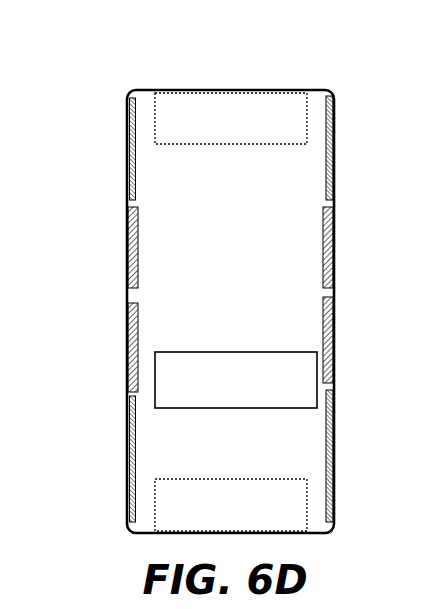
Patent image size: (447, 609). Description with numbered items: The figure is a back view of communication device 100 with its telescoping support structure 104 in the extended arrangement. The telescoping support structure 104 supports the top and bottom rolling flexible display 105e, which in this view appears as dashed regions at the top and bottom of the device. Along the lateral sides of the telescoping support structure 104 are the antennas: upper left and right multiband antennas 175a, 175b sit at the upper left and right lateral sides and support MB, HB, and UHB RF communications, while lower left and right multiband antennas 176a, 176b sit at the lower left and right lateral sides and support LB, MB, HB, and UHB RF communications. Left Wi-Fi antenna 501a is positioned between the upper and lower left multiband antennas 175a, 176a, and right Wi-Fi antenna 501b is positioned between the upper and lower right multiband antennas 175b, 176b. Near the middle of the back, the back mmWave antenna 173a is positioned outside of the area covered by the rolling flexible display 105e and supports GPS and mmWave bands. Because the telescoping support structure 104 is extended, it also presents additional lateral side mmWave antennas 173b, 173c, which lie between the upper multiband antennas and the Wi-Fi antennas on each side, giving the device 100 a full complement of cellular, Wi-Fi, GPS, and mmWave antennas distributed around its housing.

The communication device 100 is at (74, 90).
The telescoping support structure 104 is at (332, 533).
The top and bottom rolling flexible display 105e is at (231, 312).
The back mmWave antenna 173a is at (236, 380).
The lateral side mmWave antenna 173b is at (345, 288).
The lateral side mmWave antenna 173c is at (121, 288).
The upper left multiband antenna 175a is at (345, 98).
The upper right multiband antenna 175b is at (121, 185).
The lower left multiband antenna 176a is at (345, 515).
The lower right multiband antenna 176b is at (121, 520).
The left Wi-Fi antenna 501a is at (345, 383).
The right Wi-Fi antenna 501b is at (121, 387).